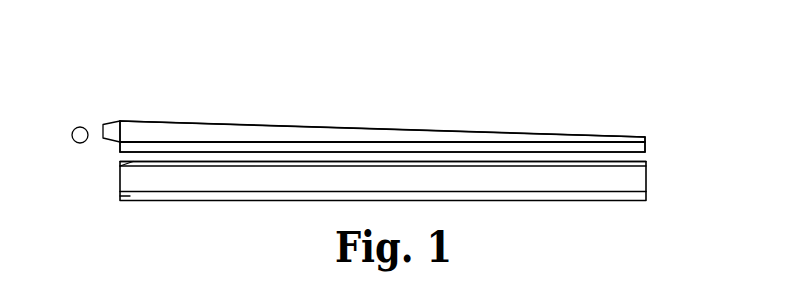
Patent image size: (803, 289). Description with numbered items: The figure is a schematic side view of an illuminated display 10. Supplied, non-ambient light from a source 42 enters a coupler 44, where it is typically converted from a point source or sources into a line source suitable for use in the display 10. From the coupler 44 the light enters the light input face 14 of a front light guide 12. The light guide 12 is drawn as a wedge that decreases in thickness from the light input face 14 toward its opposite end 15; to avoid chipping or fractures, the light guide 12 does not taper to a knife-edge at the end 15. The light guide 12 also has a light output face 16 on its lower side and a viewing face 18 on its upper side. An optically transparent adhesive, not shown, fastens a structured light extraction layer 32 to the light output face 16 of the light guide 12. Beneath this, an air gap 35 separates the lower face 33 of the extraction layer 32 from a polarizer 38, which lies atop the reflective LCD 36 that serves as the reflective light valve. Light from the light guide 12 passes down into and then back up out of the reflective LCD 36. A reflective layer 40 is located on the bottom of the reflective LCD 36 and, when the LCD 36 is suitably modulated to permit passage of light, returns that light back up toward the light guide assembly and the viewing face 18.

The illuminated display 10 is at (550, 80).
The front light guide 12 is at (439, 138).
The light input face 14 is at (122, 139).
The end 15 is at (645, 138).
The light output face 16 is at (357, 142).
The viewing face 18 is at (240, 124).
The structured light extraction layer 32 is at (638, 147).
The lower face 33 is at (603, 153).
The air gap 35 is at (527, 154).
The reflective LCD 36 is at (638, 179).
The polarizer 38 is at (120, 167).
The reflective layer 40 is at (120, 196).
The light source 42 is at (72, 141).
The coupler 44 is at (110, 128).